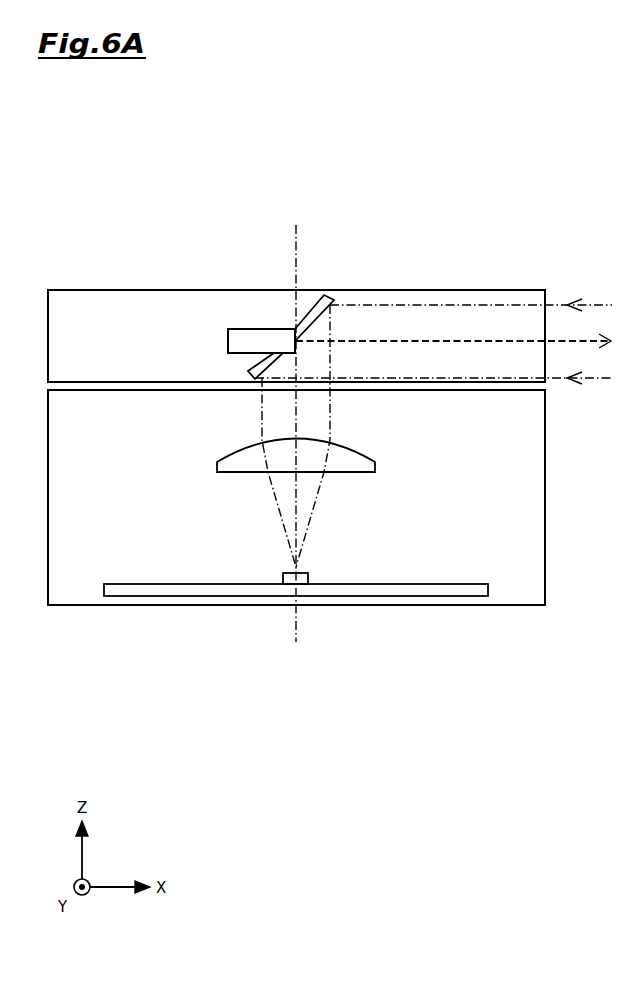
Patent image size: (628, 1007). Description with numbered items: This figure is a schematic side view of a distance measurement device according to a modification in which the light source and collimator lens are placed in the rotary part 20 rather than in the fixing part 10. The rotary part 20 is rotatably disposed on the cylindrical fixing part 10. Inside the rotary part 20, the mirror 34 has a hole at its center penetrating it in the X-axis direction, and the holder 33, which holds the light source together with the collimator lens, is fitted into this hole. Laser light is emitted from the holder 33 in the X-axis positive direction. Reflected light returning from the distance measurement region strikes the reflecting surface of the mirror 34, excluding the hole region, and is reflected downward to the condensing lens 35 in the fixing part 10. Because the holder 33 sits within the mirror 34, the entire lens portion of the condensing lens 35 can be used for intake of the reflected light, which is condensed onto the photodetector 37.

The fixing part 10 is at (465, 615).
The rotary part 20 is at (125, 278).
The holder 33 is at (253, 330).
The mirror 34 is at (323, 293).
The condensing lens 35 is at (238, 457).
The photodetector 37 is at (307, 578).